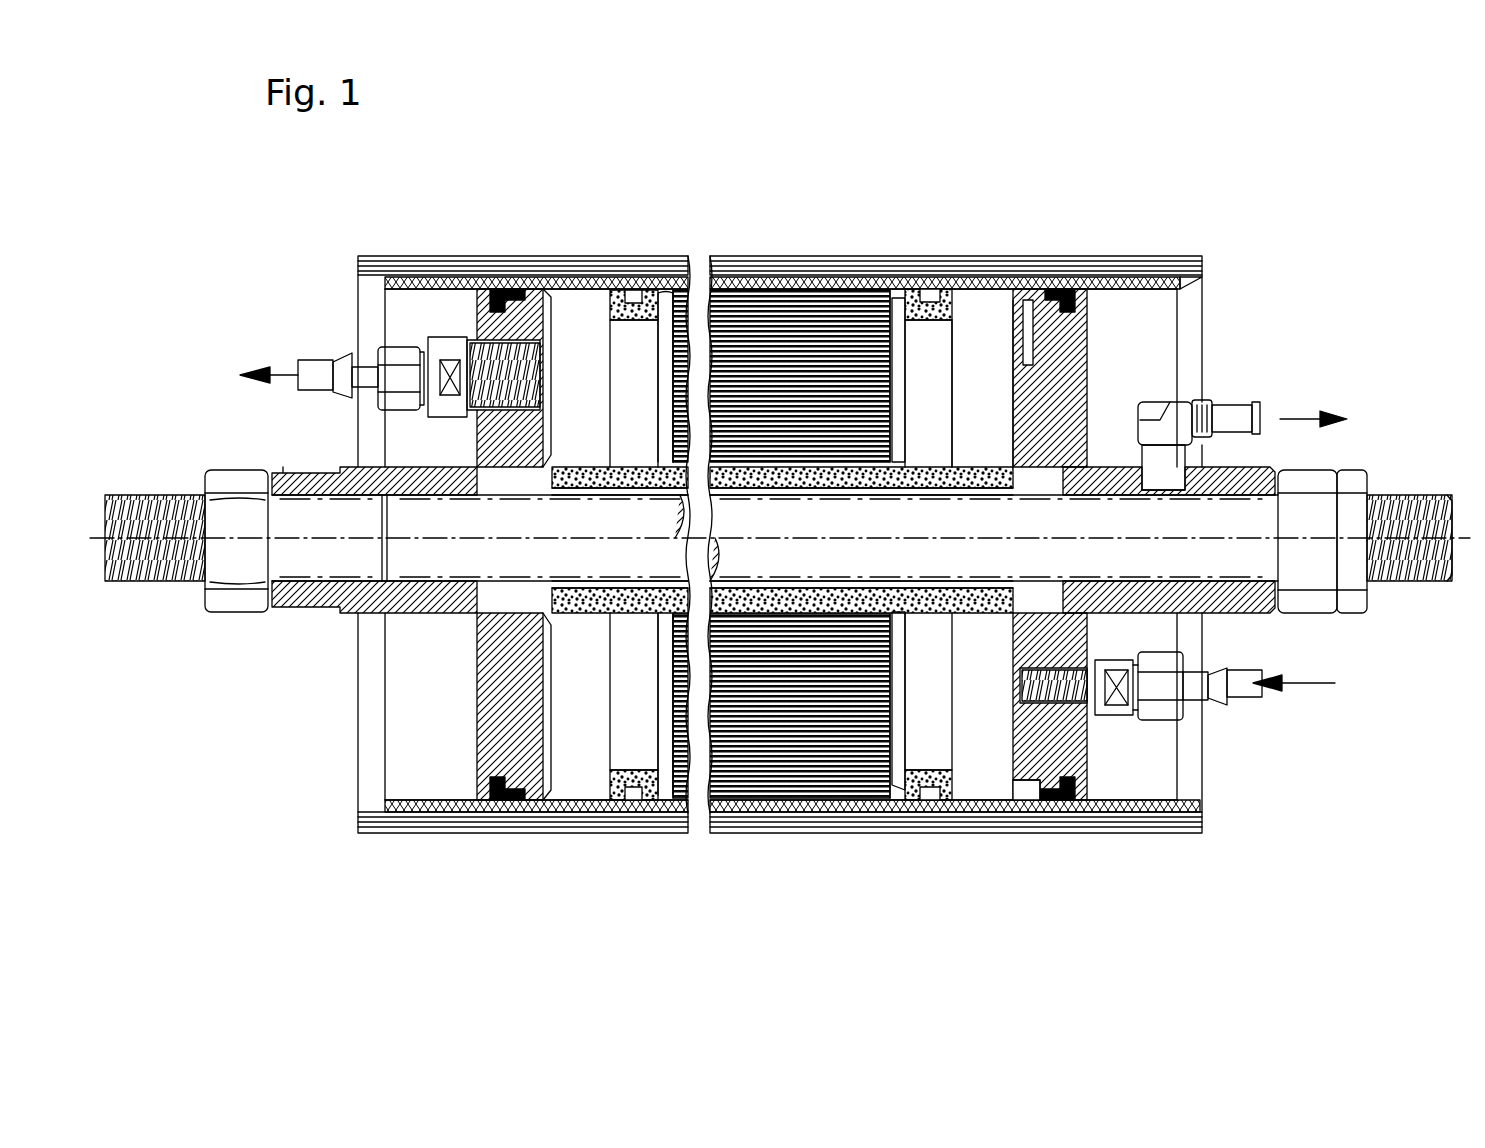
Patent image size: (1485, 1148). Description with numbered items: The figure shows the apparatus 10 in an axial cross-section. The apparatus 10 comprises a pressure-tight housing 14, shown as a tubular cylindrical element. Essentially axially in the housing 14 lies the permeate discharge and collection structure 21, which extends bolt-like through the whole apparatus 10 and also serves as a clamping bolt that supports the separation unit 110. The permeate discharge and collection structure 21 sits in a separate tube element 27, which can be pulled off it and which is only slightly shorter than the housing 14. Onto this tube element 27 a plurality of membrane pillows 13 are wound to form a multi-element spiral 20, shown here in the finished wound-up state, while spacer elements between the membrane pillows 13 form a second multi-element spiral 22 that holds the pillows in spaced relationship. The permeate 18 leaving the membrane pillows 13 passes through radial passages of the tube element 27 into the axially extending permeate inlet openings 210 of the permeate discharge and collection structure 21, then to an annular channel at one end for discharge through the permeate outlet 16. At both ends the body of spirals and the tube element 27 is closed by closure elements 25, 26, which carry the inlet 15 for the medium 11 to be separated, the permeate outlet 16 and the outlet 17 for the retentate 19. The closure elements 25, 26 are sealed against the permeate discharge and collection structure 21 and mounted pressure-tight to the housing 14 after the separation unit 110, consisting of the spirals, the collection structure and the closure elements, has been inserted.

The apparatus 10 is at (1137, 217).
The separation unit 110 is at (952, 218).
The medium to be separated 11 is at (1296, 690).
The membrane pillows 13 is at (900, 808).
The housing 14 is at (1205, 257).
The inlet 15 is at (1115, 717).
The permeate outlet 16 is at (1190, 398).
The outlet for the retentate 17 is at (448, 347).
The permeate 18 is at (1290, 407).
The retentate 19 is at (290, 370).
The multi-element spiral 20 is at (785, 800).
The second multi-element spiral 22 is at (781, 608).
The permeate discharge and collection structure 21 is at (1176, 518).
The permeate inlet openings 210 is at (1186, 620).
The closure element 25 is at (1060, 755).
The closure element 26 is at (497, 752).
The tube element 27 is at (985, 482).